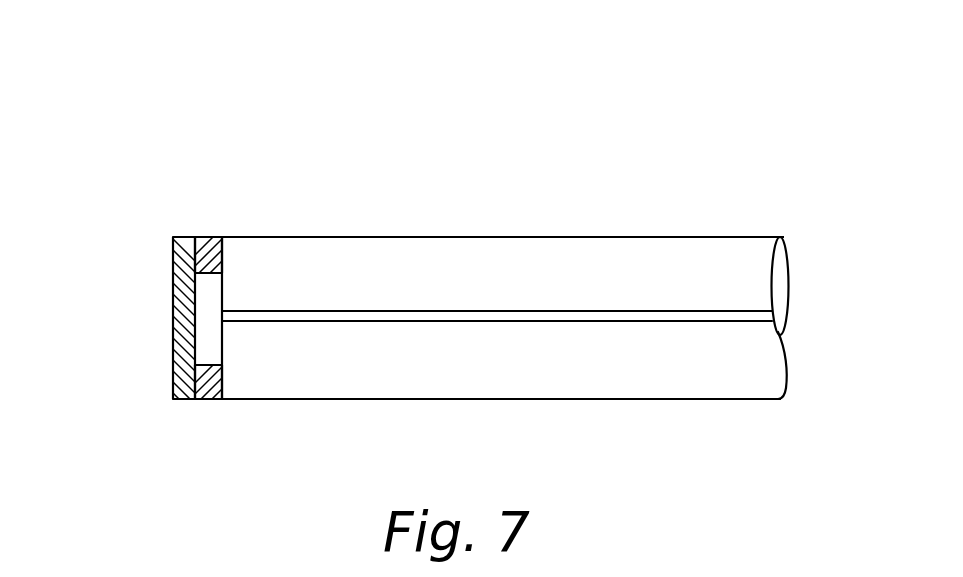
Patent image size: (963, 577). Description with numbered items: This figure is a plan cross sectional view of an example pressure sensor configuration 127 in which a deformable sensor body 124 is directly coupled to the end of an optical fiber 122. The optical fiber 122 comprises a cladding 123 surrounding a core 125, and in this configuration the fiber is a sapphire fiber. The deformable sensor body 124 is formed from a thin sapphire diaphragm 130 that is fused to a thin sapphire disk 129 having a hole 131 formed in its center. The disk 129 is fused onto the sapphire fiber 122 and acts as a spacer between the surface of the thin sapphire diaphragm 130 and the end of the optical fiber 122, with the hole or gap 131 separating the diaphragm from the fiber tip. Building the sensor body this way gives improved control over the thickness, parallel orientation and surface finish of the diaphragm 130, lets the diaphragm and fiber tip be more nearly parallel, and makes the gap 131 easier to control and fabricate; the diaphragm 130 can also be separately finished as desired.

The optical fiber 122 is at (552, 236).
The cladding 123 is at (717, 258).
The deformable sensor body 124 is at (108, 327).
The core 125 is at (727, 313).
The example configuration 127 is at (571, 136).
The thin sapphire disk 129 is at (215, 402).
The thin sapphire diaphragm 130 is at (177, 400).
The hole 131 is at (211, 292).